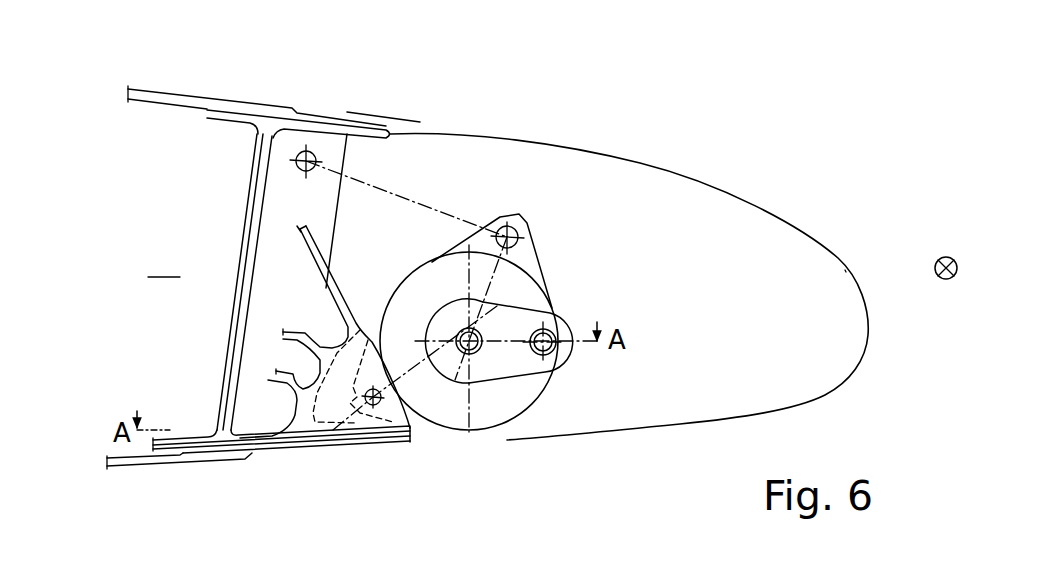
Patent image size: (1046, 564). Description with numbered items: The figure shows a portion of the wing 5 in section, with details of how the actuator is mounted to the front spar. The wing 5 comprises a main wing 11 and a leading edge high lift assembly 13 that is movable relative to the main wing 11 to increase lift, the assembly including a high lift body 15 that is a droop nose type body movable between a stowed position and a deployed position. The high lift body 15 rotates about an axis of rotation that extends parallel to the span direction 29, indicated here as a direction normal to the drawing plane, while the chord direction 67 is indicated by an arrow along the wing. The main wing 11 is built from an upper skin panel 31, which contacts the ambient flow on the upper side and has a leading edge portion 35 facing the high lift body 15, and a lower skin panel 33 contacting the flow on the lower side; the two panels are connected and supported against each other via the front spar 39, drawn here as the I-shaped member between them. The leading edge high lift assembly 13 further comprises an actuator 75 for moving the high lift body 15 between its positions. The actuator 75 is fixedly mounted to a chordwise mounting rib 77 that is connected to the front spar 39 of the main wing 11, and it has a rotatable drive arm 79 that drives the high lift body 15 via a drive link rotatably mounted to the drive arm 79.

The wing 5 is at (100, 138).
The main wing 11 is at (165, 263).
The leading edge high lift assembly 13 is at (790, 150).
The high lift body 15 is at (791, 238).
The span direction 29 is at (946, 256).
The upper skin panel 31 is at (238, 122).
The lower skin panel 33 is at (202, 464).
The leading edge portion 35 is at (367, 127).
The front spar 39 is at (257, 203).
The chord direction 67 is at (150, 72).
The actuator 75 is at (457, 413).
The chordwise mounting rib 77 is at (357, 423).
The rotatable drive arm 79 is at (517, 363).